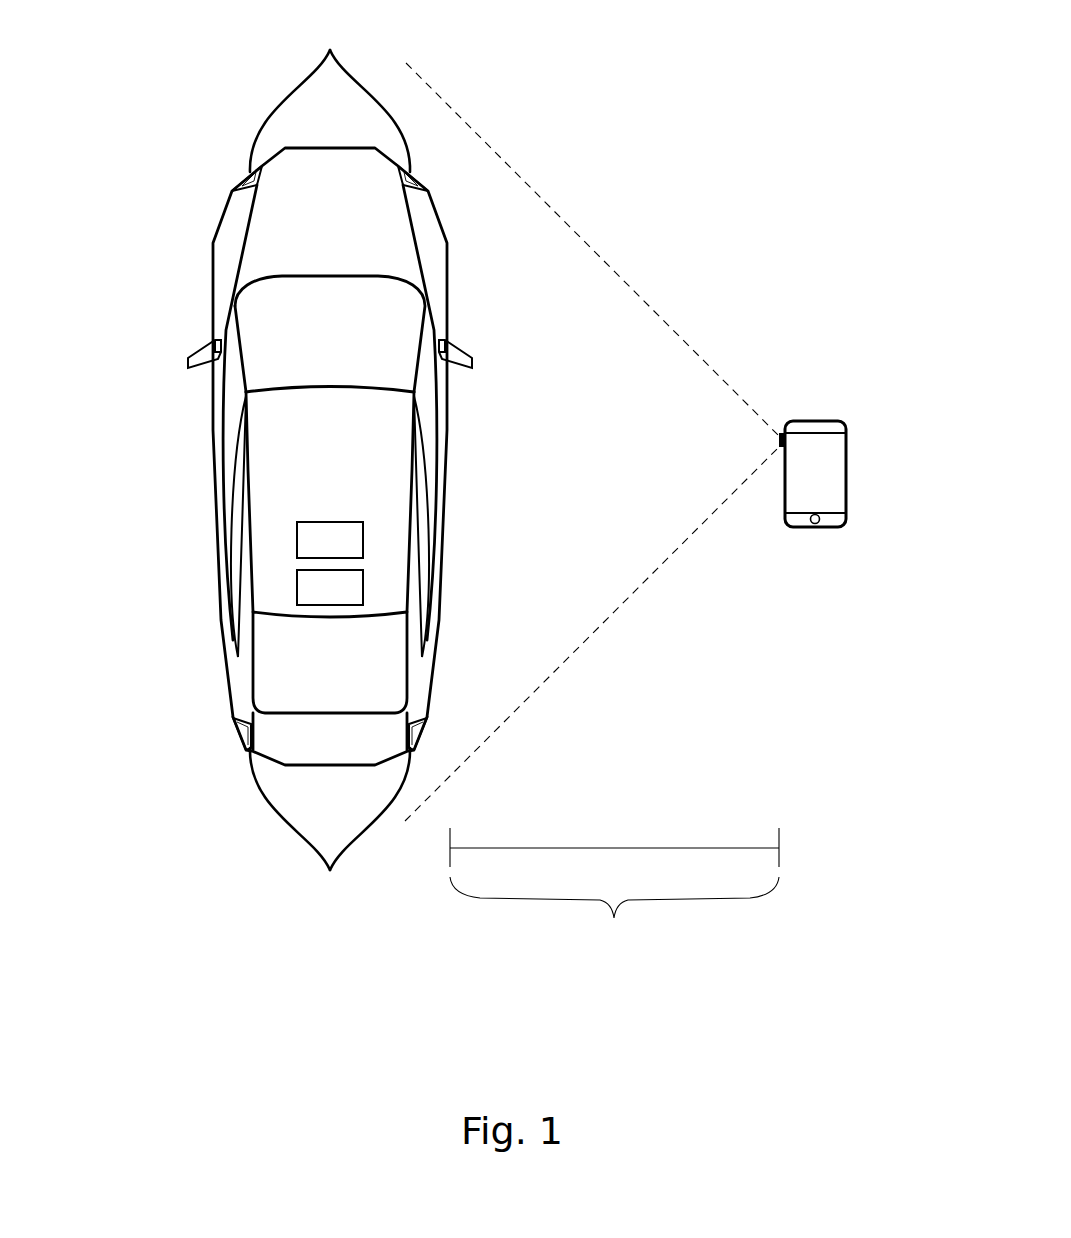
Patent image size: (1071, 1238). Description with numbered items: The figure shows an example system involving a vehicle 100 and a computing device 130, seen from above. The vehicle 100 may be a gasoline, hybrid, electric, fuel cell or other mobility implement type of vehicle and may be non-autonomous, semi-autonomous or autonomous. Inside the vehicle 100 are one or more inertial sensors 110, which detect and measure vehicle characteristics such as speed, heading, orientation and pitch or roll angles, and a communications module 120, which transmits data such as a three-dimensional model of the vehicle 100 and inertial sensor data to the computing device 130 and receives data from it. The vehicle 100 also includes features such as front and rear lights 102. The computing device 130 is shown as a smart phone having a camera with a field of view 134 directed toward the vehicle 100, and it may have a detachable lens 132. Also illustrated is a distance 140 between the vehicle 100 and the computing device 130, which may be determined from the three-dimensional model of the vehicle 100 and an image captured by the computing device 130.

The vehicle 100 is at (216, 232).
The front and rear lights 102 is at (330, 460).
The inertial sensors 110 is at (312, 551).
The communications module 120 is at (312, 599).
The computing device 130 is at (846, 477).
The detachable lens 132 is at (781, 432).
The field of view 134 is at (595, 250).
The distance 140 is at (614, 888).